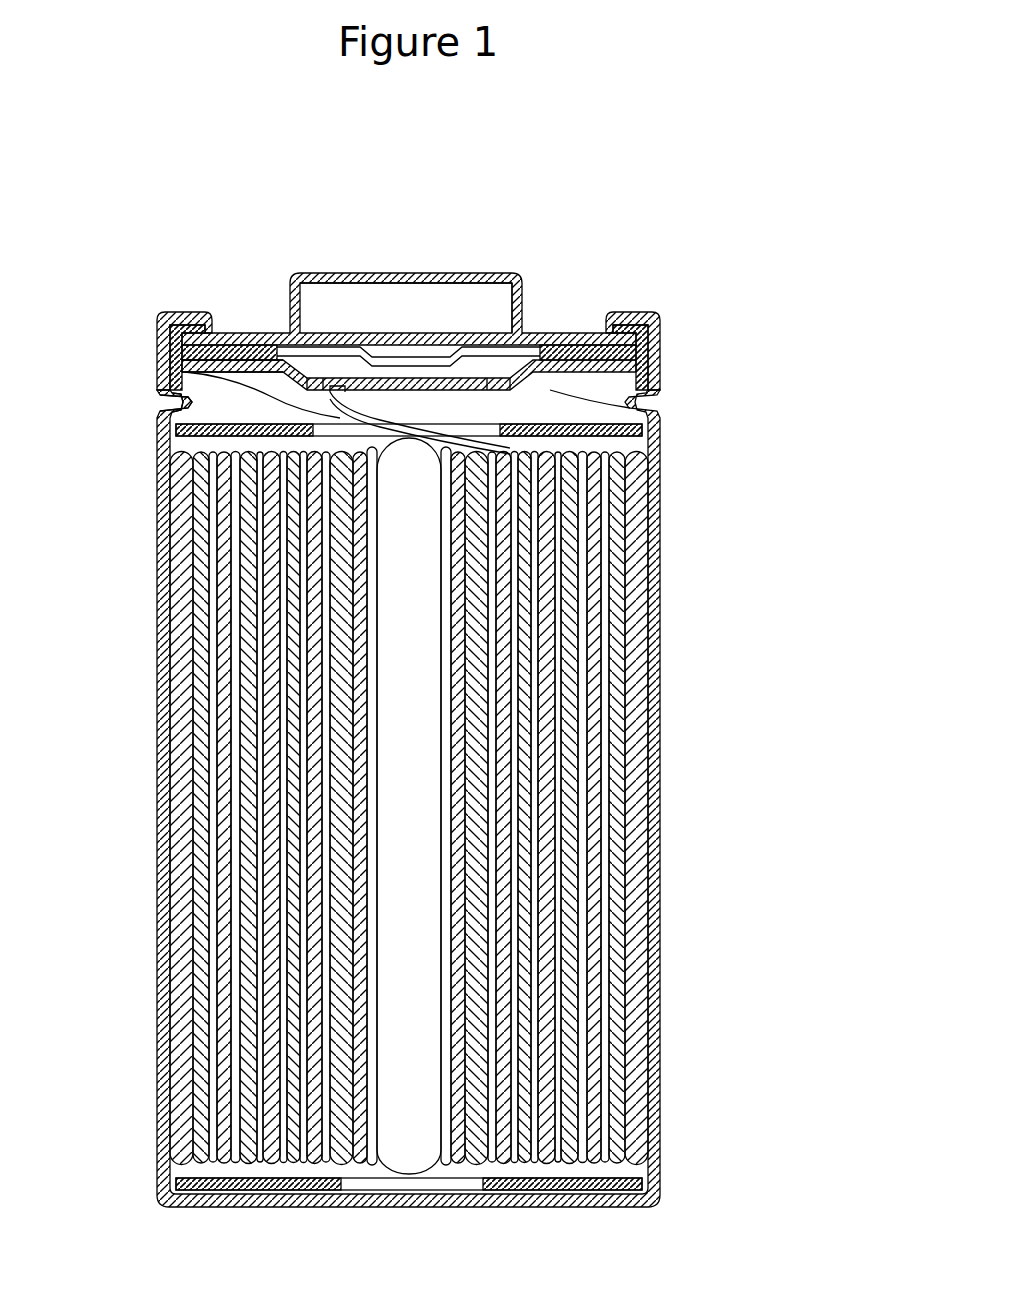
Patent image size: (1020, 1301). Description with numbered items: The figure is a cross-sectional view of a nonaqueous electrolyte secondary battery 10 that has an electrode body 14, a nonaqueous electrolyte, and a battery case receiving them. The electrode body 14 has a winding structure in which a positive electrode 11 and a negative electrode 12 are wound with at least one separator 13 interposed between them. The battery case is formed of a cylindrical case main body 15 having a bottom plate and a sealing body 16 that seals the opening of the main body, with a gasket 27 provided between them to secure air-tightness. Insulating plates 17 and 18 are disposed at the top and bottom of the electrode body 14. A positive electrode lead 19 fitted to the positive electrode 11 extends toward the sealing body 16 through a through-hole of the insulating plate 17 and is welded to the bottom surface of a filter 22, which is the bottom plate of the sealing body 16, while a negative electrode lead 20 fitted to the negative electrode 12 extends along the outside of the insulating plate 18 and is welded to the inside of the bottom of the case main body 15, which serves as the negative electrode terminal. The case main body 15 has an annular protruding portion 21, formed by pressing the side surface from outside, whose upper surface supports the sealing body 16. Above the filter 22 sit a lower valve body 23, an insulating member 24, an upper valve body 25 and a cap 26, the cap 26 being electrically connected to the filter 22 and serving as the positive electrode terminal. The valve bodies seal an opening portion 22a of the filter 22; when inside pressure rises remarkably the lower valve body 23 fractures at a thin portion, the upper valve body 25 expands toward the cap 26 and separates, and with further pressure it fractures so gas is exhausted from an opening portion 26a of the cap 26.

The nonaqueous electrolyte secondary battery 10 is at (645, 152).
The positive electrode 11 is at (617, 872).
The negative electrode 12 is at (606, 902).
The separator 13 is at (636, 934).
The electrode body 14 is at (753, 862).
The case main body 15 is at (660, 314).
The sealing body 16 is at (520, 272).
The insulating plate 17 is at (651, 431).
The insulating plate 18 is at (643, 1190).
The positive electrode lead 19 is at (157, 384).
The negative electrode lead 20 is at (157, 1168).
The protruding portion 21 is at (160, 416).
The filter 22 is at (408, 362).
The opening portion 22a is at (500, 372).
The lower valve body 23 is at (300, 345).
The insulating member 24 is at (240, 372).
The upper valve body 25 is at (333, 372).
The cap 26 is at (483, 288).
The opening portion 26a is at (524, 300).
The gasket 27 is at (657, 331).